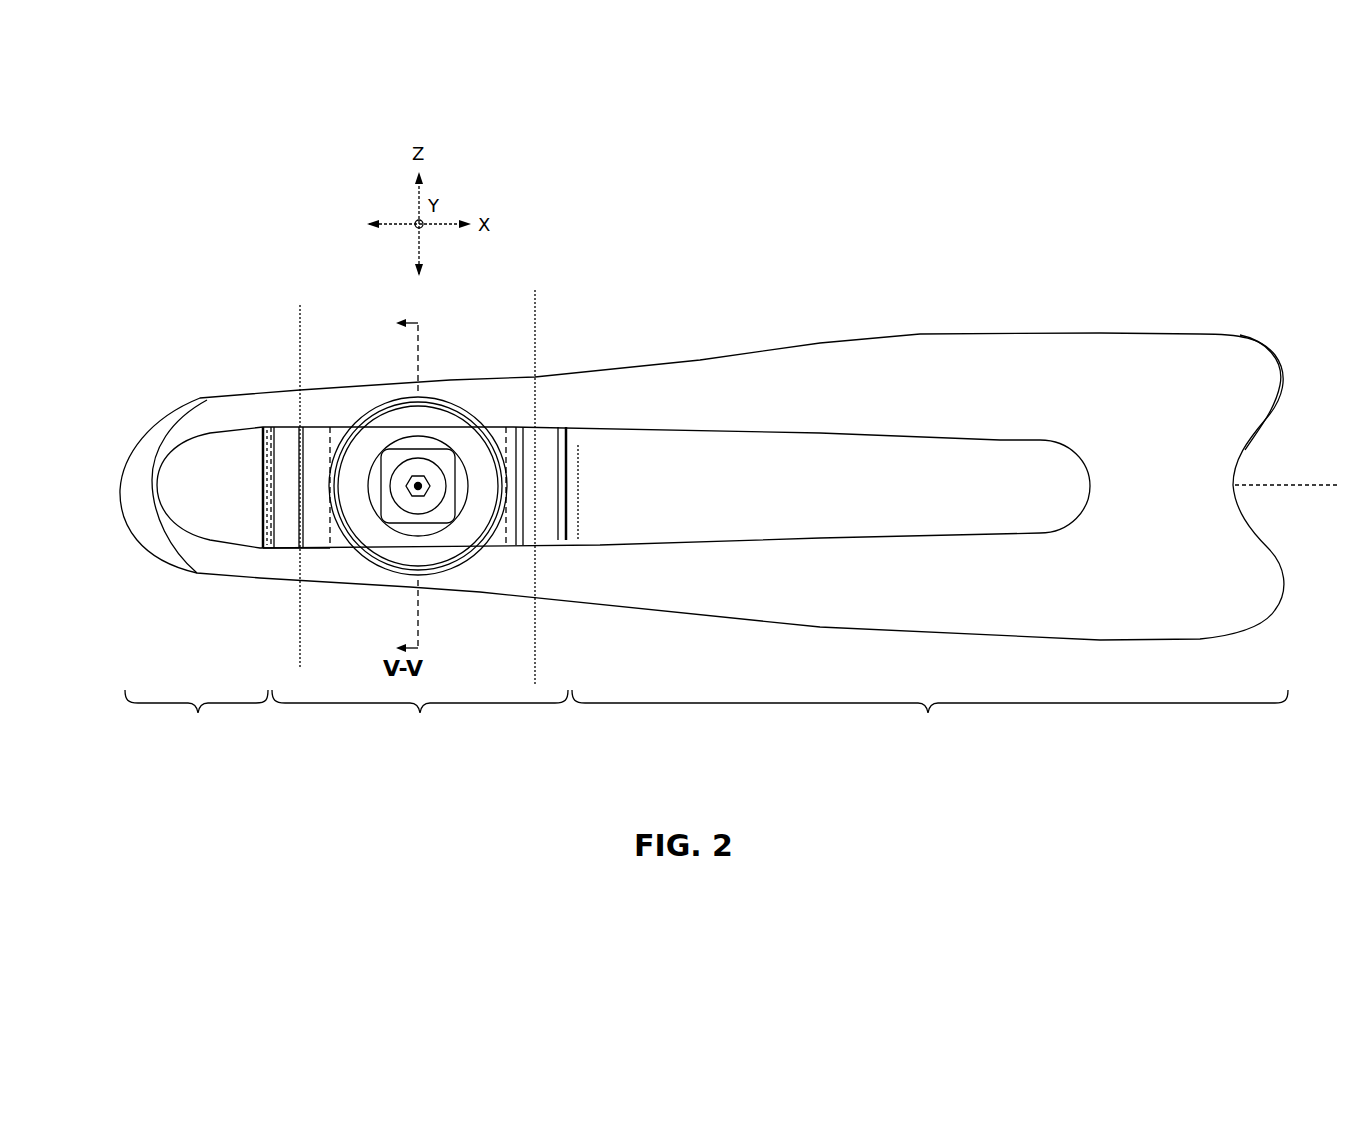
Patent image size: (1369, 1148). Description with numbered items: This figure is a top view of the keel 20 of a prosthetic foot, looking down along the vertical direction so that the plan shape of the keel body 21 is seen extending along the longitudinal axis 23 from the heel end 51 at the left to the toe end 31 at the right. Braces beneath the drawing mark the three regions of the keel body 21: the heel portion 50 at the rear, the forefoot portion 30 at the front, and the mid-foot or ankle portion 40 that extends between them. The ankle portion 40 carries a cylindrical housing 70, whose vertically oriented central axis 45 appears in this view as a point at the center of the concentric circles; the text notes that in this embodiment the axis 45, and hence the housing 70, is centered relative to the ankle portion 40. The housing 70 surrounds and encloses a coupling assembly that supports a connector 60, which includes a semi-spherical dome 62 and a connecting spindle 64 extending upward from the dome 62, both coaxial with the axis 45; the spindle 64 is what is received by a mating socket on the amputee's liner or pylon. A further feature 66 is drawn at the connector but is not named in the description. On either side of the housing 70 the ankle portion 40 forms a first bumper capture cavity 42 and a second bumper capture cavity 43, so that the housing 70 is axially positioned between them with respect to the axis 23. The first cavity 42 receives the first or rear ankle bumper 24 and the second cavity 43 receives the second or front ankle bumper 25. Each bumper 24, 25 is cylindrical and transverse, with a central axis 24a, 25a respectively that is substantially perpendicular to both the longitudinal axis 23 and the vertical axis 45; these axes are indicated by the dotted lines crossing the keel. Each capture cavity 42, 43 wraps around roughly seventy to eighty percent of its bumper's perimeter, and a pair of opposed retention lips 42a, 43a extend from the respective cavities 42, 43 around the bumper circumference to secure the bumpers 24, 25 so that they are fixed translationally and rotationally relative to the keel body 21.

The keel 20 is at (1085, 256).
The keel body 21 is at (913, 344).
The longitudinal axis 23 is at (1307, 487).
The first or rear ankle bumper 24 is at (283, 540).
The central axis of first bumper 24a is at (300, 306).
The second or front ankle bumper 25 is at (550, 458).
The central axis of second bumper 25a is at (535, 298).
The forefoot portion 30 is at (930, 720).
The toe end 31 is at (1270, 380).
The ankle portion 40 is at (420, 720).
The first bumper capture cavity 42 is at (265, 447).
The retention lips 42a is at (264, 487).
The second bumper capture cavity 43 is at (568, 525).
The retention lips 43a is at (562, 498).
The central axis 45 is at (428, 490).
The heel portion 50 is at (196, 720).
The heel end 51 is at (122, 518).
The connector 60 is at (402, 397).
The semi-spherical dome 62 is at (370, 540).
The connecting spindle 64 is at (377, 473).
The inner bearing 66 is at (450, 497).
The cylindrical housing 70 is at (453, 404).